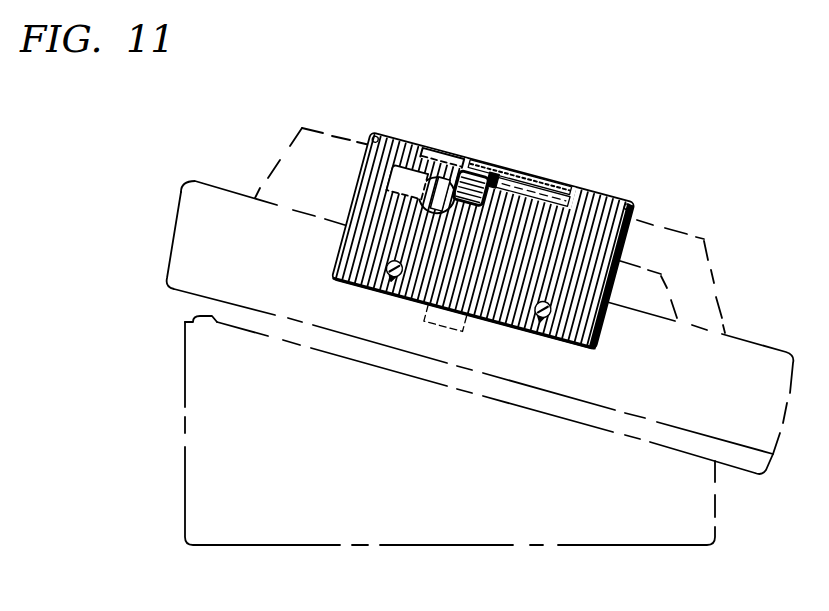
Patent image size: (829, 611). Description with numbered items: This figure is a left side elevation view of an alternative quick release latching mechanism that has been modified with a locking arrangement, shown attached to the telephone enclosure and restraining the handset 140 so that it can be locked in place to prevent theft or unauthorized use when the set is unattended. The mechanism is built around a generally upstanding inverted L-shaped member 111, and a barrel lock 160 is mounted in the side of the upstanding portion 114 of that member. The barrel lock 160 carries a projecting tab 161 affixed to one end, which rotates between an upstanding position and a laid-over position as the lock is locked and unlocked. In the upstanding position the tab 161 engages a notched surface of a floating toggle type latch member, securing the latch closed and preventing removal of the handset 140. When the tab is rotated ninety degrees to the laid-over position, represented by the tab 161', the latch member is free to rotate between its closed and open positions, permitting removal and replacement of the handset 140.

The inverted L-shaped member 111 is at (592, 188).
The upstanding portion 114 is at (565, 350).
The handset 140 is at (695, 252).
The barrel lock 160 is at (442, 212).
The projecting tab 161 is at (436, 130).
The projecting tab in laid-over position 161' is at (391, 208).